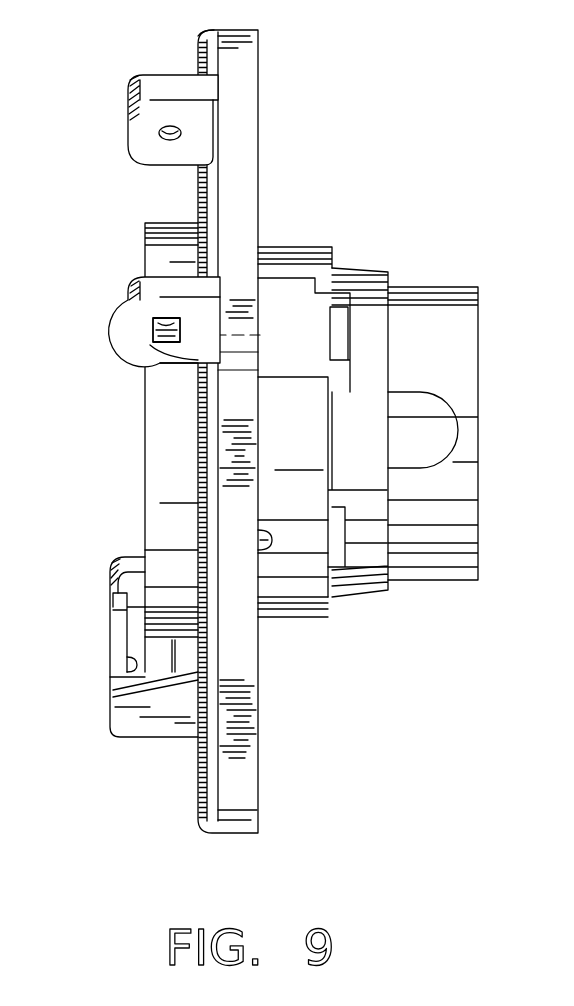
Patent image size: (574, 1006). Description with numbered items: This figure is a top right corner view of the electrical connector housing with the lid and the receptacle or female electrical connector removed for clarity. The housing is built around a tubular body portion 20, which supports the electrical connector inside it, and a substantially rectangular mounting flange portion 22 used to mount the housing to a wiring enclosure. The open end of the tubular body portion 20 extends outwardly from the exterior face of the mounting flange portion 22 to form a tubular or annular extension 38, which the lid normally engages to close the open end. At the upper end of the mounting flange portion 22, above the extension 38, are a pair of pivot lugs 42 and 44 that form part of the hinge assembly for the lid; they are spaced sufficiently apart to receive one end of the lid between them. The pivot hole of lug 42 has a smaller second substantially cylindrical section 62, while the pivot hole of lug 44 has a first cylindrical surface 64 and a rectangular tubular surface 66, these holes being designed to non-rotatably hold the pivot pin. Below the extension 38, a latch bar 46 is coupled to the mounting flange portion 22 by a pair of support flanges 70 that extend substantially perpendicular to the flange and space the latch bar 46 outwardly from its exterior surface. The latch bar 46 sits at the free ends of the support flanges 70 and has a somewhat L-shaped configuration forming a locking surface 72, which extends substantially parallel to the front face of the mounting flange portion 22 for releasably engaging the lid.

The tubular body portion 20 is at (432, 289).
The mounting flange portion 22 is at (260, 97).
The tubular or annular extension 38 is at (145, 482).
The pivot lug 42 is at (132, 153).
The pivot lug 44 is at (121, 352).
The latch bar 46 is at (106, 677).
The second substantially cylindrical section 62 is at (170, 142).
The first cylindrical surface 64 is at (150, 330).
The rectangular tubular surface 66 is at (150, 375).
The support flanges 70 is at (123, 560).
The locking surface 72 is at (110, 677).